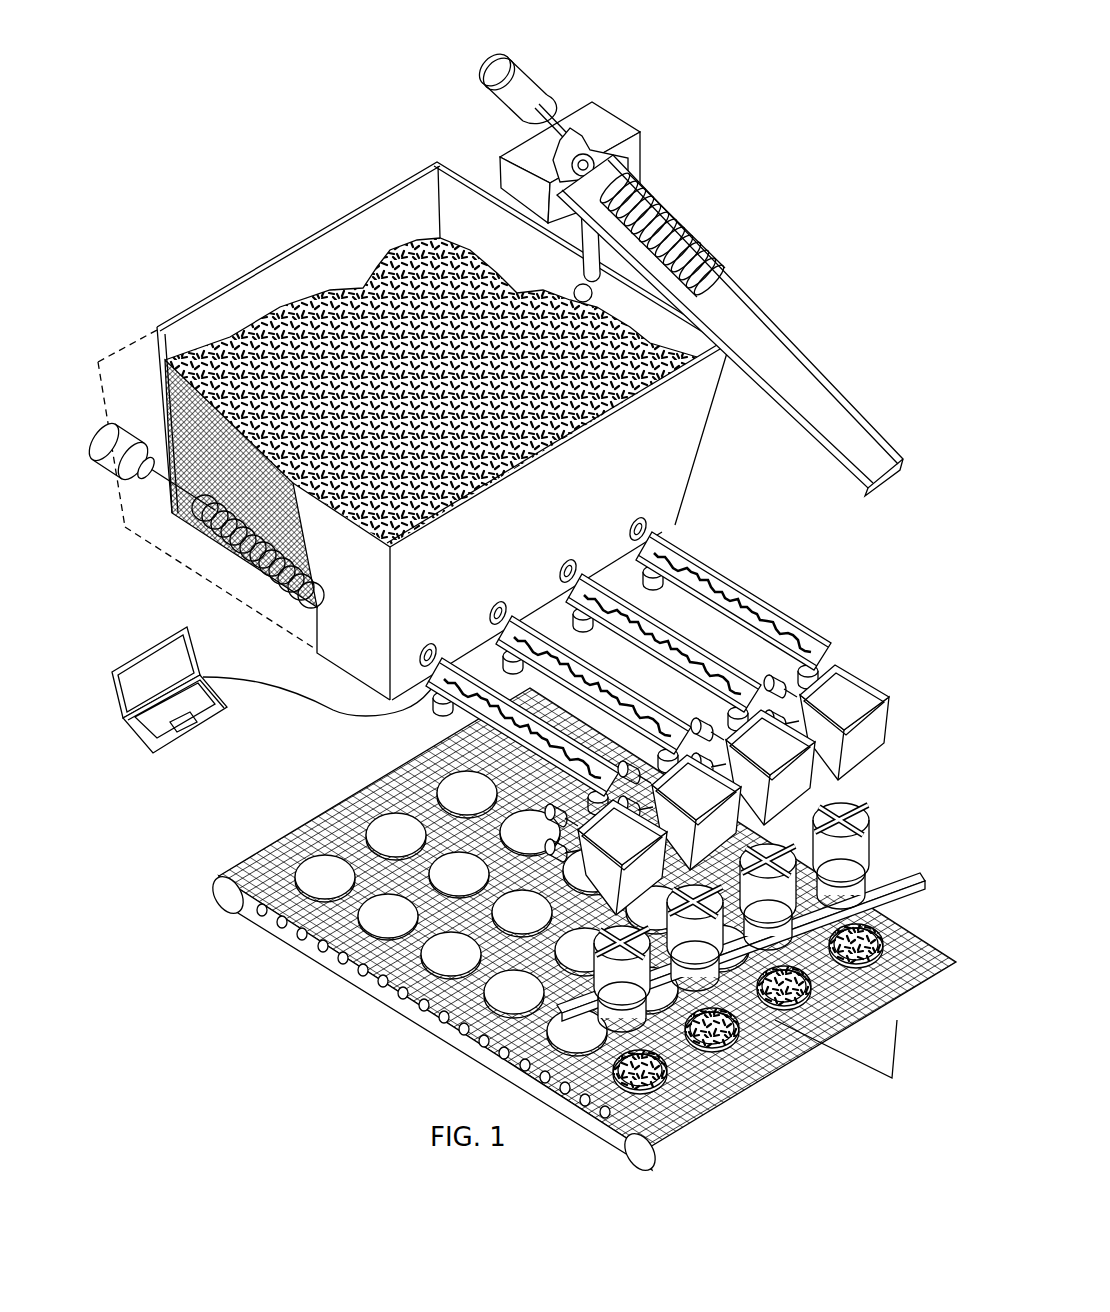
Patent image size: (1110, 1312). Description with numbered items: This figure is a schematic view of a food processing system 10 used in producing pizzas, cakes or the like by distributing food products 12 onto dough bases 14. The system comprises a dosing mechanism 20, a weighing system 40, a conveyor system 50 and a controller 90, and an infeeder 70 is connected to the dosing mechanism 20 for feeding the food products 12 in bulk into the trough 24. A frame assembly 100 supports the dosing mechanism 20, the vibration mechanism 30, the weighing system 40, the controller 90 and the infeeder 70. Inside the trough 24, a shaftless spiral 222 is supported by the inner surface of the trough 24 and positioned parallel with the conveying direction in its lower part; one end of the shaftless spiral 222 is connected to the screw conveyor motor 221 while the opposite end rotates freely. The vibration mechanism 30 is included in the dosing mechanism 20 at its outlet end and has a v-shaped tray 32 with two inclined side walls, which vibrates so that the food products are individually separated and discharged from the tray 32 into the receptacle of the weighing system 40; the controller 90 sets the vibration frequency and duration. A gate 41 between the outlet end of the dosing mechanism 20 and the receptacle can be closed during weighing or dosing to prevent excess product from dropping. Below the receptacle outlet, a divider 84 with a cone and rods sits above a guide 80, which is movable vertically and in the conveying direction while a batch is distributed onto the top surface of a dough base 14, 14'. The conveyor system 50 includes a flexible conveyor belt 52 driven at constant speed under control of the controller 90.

The food processing system 10 is at (126, 116).
The dosing mechanism 20 is at (362, 186).
The trough 24 is at (183, 317).
The food products 12 is at (170, 398).
The screw conveyor motor 221 is at (110, 434).
The shaftless spiral 222 is at (193, 527).
The frame assembly 100 is at (138, 625).
The controller 90 is at (612, 117).
The infeeder 70 is at (780, 268).
The vibration mechanism 30 is at (796, 586).
The tray 32 is at (705, 545).
The weighing system 40 is at (897, 771).
The gate 41 is at (897, 727).
The divider 84 is at (895, 809).
The guide 80 is at (898, 846).
The dough base 14 is at (522, 887).
The dough base 14' is at (792, 991).
The conveyor system 50 is at (903, 1011).
The conveyor belt 52 is at (735, 1085).